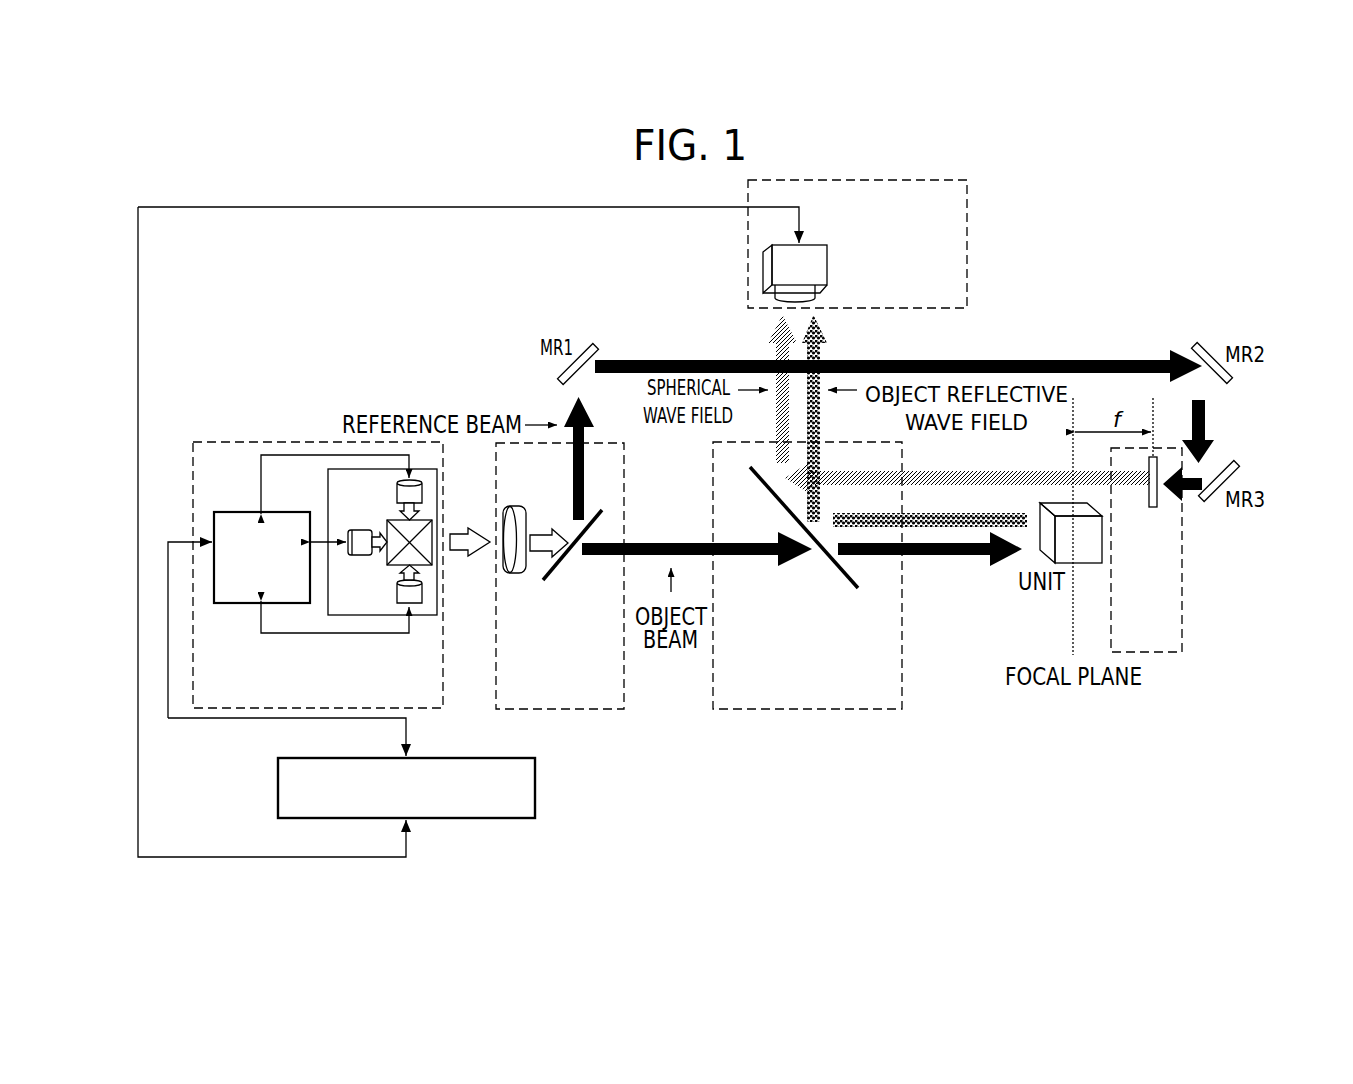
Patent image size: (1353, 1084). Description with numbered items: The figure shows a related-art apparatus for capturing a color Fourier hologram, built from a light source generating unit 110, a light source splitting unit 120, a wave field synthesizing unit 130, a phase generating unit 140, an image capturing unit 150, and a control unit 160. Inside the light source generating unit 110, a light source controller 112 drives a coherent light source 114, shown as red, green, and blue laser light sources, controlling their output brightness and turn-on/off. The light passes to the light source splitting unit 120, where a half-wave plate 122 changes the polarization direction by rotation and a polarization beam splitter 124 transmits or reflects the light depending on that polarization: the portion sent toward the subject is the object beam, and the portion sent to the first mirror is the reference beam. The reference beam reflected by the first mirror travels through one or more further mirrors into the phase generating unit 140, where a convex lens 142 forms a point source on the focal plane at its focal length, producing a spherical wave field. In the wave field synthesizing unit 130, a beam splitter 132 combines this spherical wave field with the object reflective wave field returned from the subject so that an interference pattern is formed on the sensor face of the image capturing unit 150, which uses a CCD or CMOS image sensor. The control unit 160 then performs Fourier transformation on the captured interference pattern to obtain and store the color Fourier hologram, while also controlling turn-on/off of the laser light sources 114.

The light source generating unit 110 is at (310, 442).
The light source controller 112 is at (226, 512).
The coherent light source 114 is at (328, 484).
The light source splitting unit 120 is at (588, 712).
The half-wave plate 122 is at (515, 505).
The polarization beam splitter 124 is at (607, 512).
The wave field synthesizing unit 130 is at (843, 712).
The beam splitter 132 is at (860, 580).
The phase generating unit 140 is at (1182, 648).
The convex lens 142 is at (1160, 510).
The image capturing unit 150 is at (967, 200).
The control unit 160 is at (503, 822).